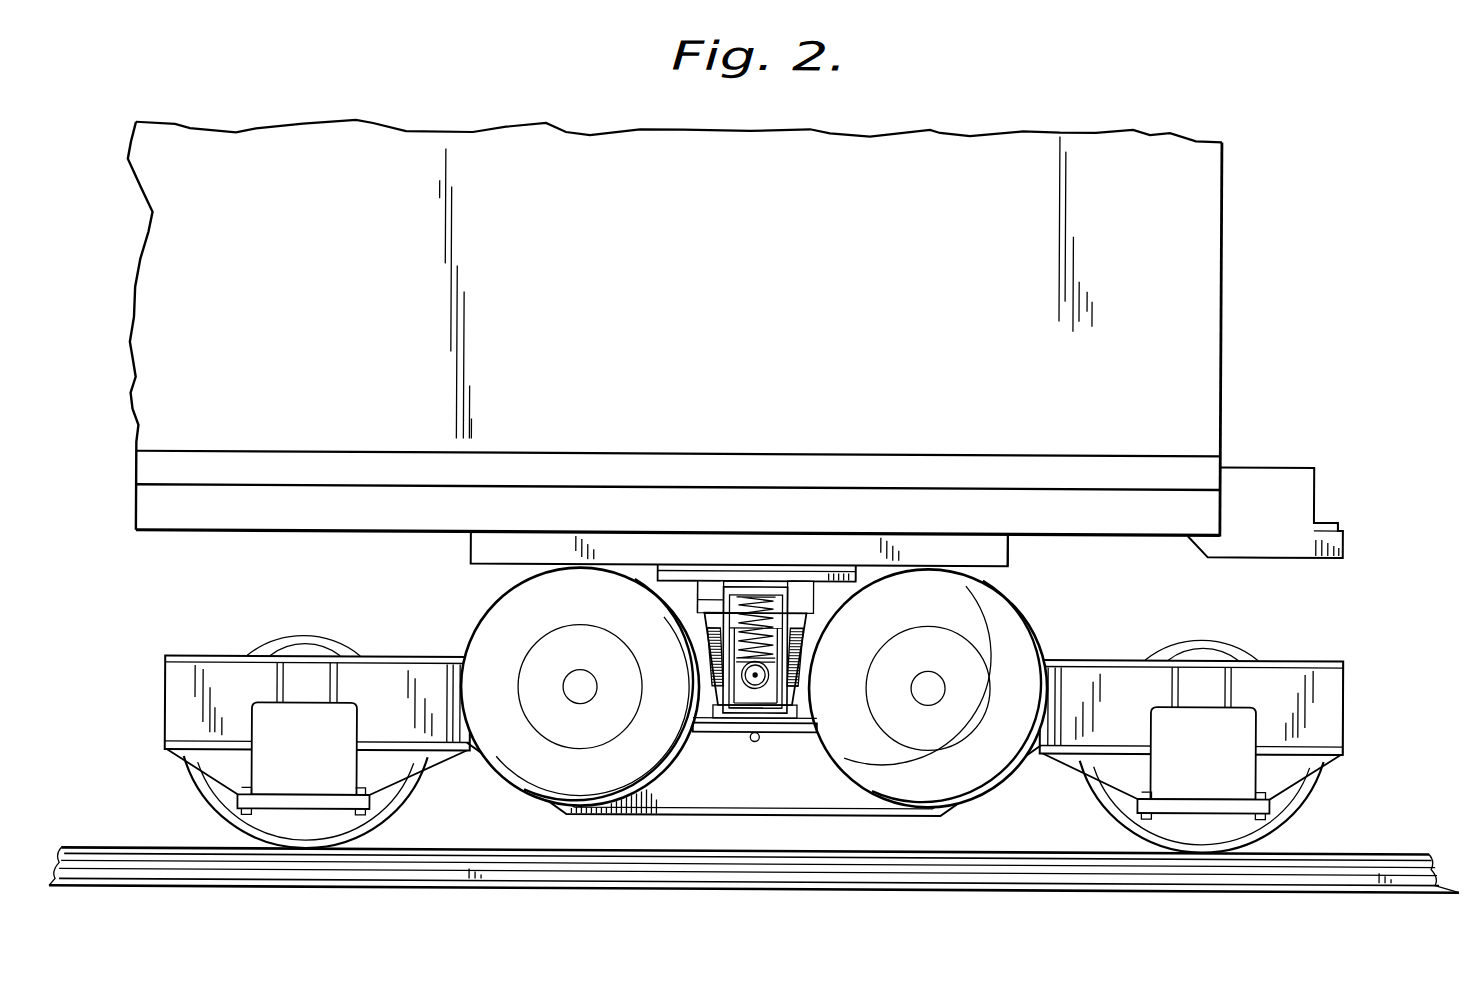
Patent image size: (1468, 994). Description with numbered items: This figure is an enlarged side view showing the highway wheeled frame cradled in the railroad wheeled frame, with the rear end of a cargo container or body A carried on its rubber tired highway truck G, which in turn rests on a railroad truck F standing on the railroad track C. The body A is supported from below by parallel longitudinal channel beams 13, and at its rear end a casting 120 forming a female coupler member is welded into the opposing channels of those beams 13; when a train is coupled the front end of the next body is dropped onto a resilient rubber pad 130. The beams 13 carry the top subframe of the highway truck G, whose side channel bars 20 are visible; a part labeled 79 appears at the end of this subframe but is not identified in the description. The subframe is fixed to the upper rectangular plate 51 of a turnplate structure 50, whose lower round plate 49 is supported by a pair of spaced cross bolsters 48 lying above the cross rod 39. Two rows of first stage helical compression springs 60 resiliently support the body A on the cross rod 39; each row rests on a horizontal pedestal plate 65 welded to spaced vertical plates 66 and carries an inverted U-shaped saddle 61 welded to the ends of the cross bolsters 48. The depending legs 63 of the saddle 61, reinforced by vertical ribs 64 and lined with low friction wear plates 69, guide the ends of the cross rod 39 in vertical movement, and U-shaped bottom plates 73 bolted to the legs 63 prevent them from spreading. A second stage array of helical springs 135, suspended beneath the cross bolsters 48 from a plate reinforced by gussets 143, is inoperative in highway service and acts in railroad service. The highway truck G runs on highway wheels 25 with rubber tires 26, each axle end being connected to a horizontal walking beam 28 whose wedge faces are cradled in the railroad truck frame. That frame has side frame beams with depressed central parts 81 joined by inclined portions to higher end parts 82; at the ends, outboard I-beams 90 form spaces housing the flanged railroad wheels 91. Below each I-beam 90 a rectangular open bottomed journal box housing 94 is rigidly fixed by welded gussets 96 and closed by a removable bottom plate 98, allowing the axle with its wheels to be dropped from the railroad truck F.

The cargo container or body A is at (1250, 240).
The parallel channel beams 13 is at (211, 523).
The casting 120 is at (1300, 456).
The resilient rubber pad 130 is at (1334, 525).
The side channel bars 20 is at (527, 548).
The end of center sill 79 is at (1015, 551).
The helical compression springs 60 is at (757, 558).
The gussets 143 is at (642, 581).
The lower horizontal round plate 49 is at (673, 572).
The cross bolsters 48 is at (707, 580).
The upper rectangular plate 51 is at (752, 568).
The turnplate structure 50 is at (866, 569).
The inverted U-shaped saddle 61 is at (688, 601).
The vertical ribs 64 is at (702, 620).
The second stage helical springs 135 is at (700, 648).
The low friction wear plates 69 is at (733, 672).
The saddle sides or legs 63 is at (737, 690).
The horizontal rectangular plate 65 is at (787, 672).
The cross rod 39 is at (756, 690).
The spaced vertical rectangular plates 66 is at (741, 718).
The walking beam 28 is at (810, 708).
The U-shaped bottom plates 73 is at (805, 738).
The central parts of side frame beams 81 is at (698, 806).
The highway wheels 25 is at (523, 793).
The highway truck G is at (478, 607).
The rubber tire 26 is at (566, 764).
The I-beams 90 is at (165, 686).
The flanged railroad wheels 91 is at (222, 820).
The higher end parts of side frame beams 82 is at (228, 657).
The gussets 96 is at (332, 682).
The journal box housing 94 is at (326, 728).
The removable bottom plate 98 is at (280, 804).
The railroad truck F is at (1355, 690).
The railroad track C is at (1398, 846).